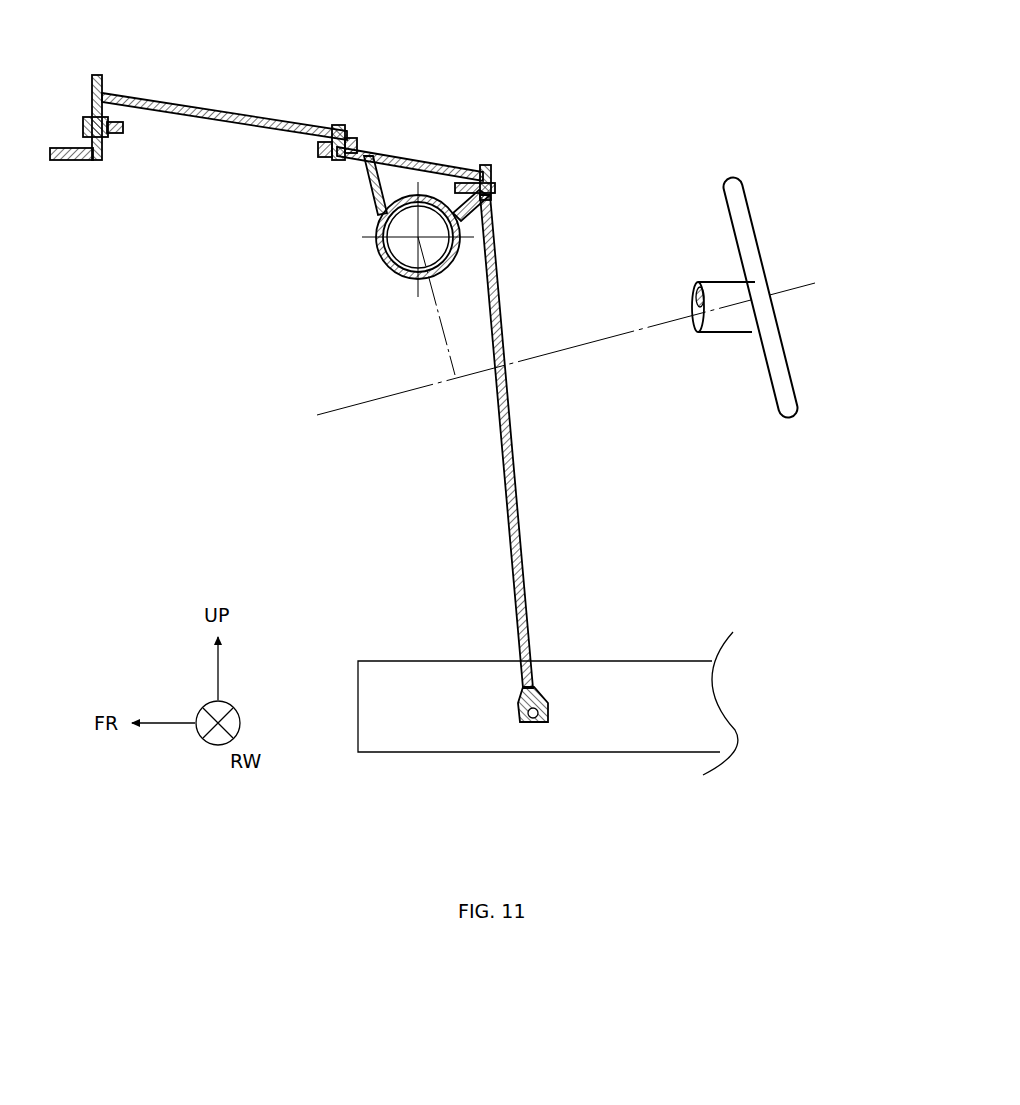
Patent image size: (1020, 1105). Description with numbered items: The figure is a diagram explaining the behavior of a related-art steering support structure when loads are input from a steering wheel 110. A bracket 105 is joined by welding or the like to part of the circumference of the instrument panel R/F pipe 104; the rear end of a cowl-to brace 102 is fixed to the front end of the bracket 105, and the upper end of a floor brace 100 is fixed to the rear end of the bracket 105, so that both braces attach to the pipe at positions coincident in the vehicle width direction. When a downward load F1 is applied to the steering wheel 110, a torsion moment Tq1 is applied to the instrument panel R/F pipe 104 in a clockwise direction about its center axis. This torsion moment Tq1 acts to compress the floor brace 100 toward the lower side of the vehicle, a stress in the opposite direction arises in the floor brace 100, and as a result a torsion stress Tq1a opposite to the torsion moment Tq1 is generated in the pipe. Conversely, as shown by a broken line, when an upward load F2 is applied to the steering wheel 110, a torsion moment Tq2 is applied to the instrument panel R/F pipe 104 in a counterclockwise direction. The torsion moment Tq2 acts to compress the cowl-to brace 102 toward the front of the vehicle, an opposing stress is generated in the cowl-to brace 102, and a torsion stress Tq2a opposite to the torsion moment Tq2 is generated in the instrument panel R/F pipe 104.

The floor brace 100 is at (519, 527).
The cowl-to brace 102 is at (240, 110).
The instrument panel R/F pipe 104 is at (380, 260).
The bracket 105 is at (407, 152).
The steering wheel 110 is at (733, 195).
The downward load F1 is at (758, 295).
The upward load F2 is at (758, 295).
The torsion moment Tq1 is at (432, 226).
The torsion moment Tq2 is at (430, 221).
The torsion stress Tq1a is at (471, 240).
The torsion stress Tq2a is at (393, 180).